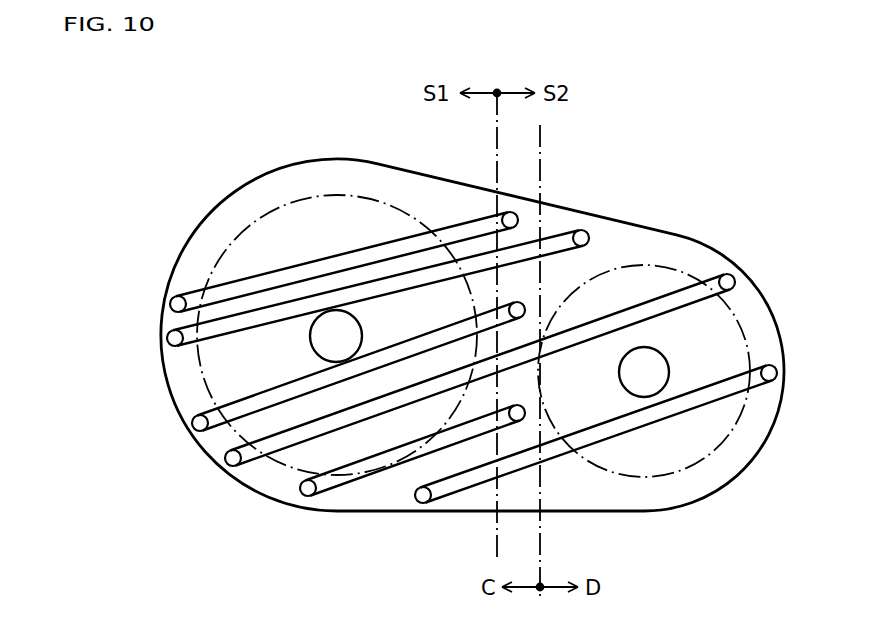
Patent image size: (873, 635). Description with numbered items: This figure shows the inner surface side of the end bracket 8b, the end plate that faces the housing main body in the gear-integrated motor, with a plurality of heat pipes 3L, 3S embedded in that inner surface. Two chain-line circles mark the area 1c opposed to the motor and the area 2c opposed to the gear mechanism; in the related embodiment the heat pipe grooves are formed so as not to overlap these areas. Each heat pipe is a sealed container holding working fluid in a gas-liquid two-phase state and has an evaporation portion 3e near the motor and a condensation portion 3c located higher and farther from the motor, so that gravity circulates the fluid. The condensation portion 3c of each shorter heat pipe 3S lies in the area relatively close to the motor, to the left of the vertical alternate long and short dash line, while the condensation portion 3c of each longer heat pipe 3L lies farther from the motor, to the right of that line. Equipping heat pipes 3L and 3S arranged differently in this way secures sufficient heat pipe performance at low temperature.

The end bracket 8b is at (303, 161).
The area opposed to the motor 1c is at (250, 227).
The area opposed to the gear mechanism 2c is at (710, 450).
The heat pipe 3S is at (207, 288).
The heat pipe 3L is at (470, 265).
The evaporation portion 3e is at (167, 340).
The condensation portion 3c is at (587, 237).